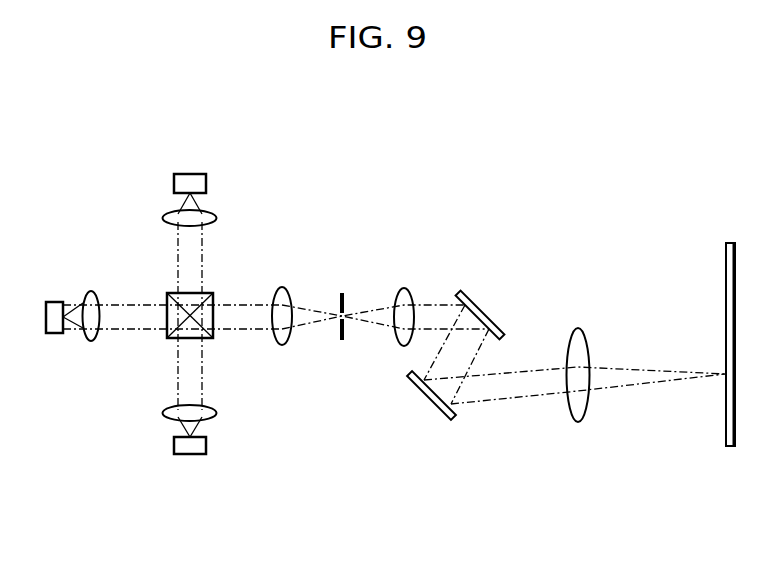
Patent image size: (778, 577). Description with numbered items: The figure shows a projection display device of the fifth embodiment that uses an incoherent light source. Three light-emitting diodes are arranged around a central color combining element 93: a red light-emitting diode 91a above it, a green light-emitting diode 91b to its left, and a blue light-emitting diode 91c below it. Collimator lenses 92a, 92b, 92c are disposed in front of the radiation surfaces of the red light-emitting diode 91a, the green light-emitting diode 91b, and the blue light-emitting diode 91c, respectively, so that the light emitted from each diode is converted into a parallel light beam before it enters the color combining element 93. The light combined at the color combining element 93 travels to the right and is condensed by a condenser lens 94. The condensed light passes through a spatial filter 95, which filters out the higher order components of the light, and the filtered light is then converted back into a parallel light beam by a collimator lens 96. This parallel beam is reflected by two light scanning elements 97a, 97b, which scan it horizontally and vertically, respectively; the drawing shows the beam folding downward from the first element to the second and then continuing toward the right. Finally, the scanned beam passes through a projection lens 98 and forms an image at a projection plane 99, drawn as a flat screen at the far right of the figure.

The red light-emitting diode 91a is at (206, 184).
The green light-emitting diode 91b is at (53, 302).
The blue light-emitting diode 91c is at (206, 447).
The collimator lens 92a is at (216, 218).
The collimator lens 92b is at (91, 341).
The collimator lens 92c is at (216, 413).
The color combining element 93 is at (213, 338).
The condenser lens 94 is at (283, 288).
The spatial filter 95 is at (346, 291).
The collimator lens 96 is at (410, 290).
The light scanning element 97a is at (490, 310).
The light scanning element 97b is at (424, 402).
The projection lens 98 is at (578, 423).
The projection plane 99 is at (726, 430).